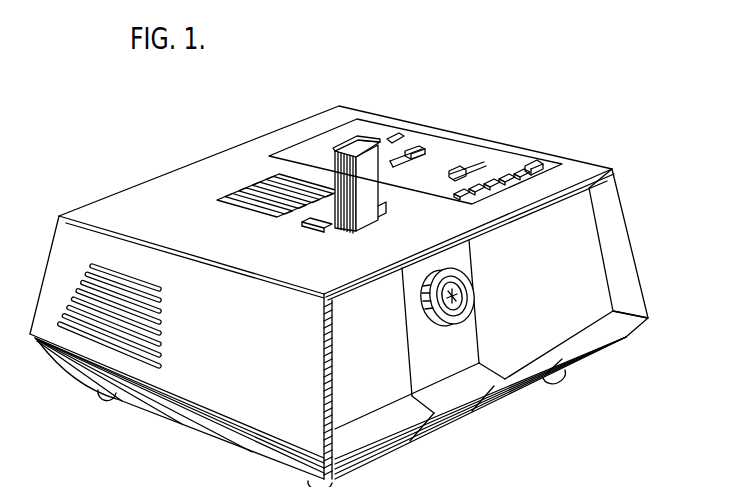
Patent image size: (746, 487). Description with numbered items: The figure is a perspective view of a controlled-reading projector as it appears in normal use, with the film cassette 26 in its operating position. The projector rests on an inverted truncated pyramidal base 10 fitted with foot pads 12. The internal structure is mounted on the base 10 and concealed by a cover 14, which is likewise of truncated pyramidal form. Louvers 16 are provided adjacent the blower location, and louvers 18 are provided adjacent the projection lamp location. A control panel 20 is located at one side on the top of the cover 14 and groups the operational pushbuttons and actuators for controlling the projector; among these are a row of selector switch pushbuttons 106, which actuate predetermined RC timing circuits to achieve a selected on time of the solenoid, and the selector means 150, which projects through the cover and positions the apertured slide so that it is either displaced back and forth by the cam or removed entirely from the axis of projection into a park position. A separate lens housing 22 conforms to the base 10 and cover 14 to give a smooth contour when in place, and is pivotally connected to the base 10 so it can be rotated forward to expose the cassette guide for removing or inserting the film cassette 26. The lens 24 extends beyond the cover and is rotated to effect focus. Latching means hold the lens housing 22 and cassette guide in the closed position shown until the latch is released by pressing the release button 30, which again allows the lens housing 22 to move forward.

The base 10 is at (597, 351).
The foot pads 12 is at (92, 389).
The cover 14 is at (623, 240).
The louvers 16 is at (138, 305).
The louvers 18 is at (275, 207).
The control panel 20 is at (462, 153).
The lens housing 22 is at (440, 397).
The lens 24 is at (450, 322).
The film cassette 26 is at (364, 137).
The release button 30 is at (309, 226).
The selector switch pushbuttons 106 is at (538, 162).
The selector means 150 is at (415, 150).